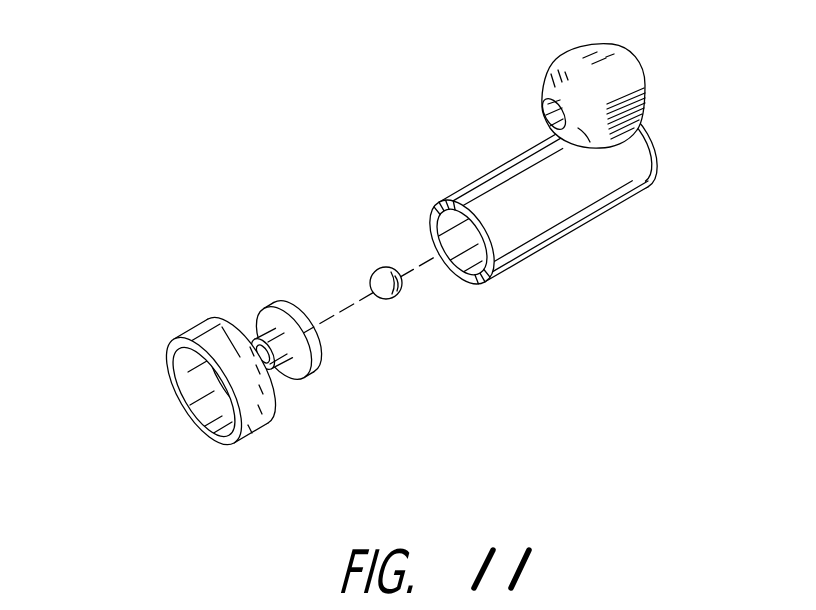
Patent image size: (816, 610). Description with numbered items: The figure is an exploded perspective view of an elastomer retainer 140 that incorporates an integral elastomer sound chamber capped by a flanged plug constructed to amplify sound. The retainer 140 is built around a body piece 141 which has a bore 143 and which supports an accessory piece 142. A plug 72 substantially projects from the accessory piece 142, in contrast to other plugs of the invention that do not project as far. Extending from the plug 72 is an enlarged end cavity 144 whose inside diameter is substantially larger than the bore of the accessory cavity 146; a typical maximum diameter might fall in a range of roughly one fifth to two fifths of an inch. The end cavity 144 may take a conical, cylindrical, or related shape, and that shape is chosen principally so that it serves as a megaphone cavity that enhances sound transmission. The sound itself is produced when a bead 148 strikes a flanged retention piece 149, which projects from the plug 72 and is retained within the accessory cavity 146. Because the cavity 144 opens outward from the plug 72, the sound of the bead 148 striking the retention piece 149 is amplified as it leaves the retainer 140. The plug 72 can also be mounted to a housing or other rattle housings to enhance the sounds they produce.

The elastomer retainer 140 is at (531, 167).
The body piece 141 is at (564, 84).
The accessory piece 142 is at (480, 204).
The bore 143 is at (546, 114).
The enlarged end cavity 144 is at (190, 398).
The accessory cavity 146 is at (440, 221).
The bead 148 is at (374, 270).
The flanged retention piece 149 is at (318, 363).
The plug 72 is at (277, 436).